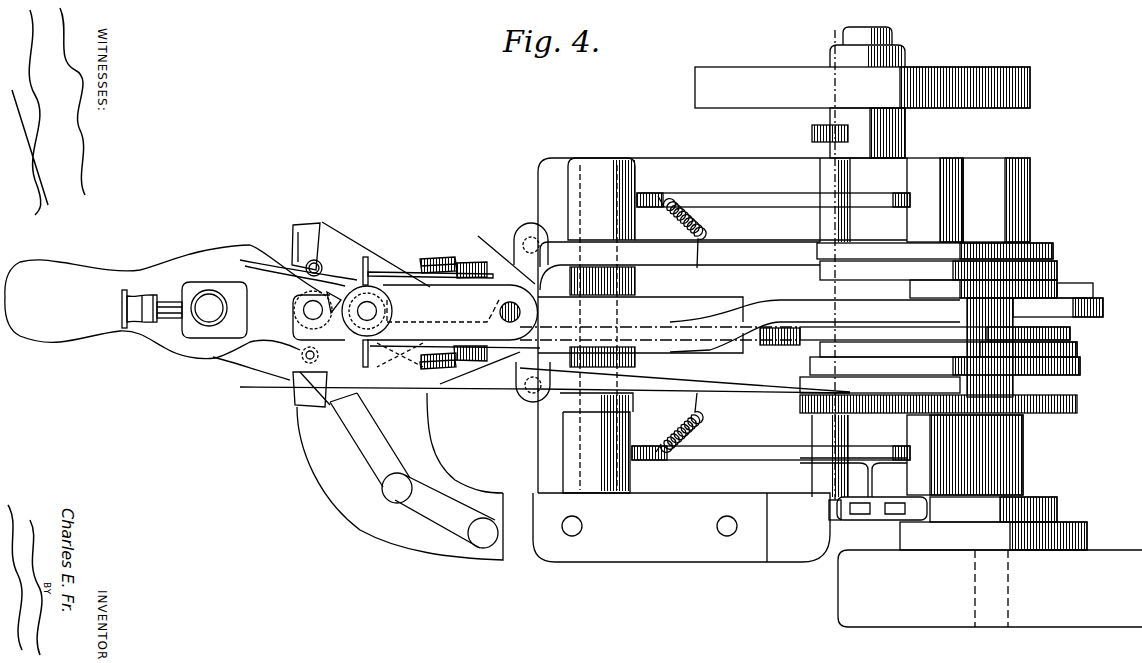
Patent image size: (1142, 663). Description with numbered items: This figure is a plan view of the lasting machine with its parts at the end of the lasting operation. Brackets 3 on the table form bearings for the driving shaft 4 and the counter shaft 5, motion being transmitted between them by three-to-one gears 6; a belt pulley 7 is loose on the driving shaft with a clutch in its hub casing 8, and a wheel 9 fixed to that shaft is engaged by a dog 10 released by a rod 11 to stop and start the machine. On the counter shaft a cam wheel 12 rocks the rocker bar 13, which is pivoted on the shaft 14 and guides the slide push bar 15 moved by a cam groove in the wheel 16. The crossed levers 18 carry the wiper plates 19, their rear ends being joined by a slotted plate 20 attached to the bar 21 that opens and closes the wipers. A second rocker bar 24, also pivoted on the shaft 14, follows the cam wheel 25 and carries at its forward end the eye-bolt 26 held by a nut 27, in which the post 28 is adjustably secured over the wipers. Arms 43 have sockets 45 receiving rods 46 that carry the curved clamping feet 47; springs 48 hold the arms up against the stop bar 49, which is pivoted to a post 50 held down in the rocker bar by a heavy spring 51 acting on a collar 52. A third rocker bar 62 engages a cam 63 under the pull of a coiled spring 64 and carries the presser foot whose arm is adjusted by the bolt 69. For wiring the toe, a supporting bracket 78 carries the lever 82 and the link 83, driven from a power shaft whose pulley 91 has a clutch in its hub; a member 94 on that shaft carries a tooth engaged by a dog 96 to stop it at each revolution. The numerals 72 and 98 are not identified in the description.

The brackets 3 is at (722, 195).
The driving shaft 4 is at (995, 160).
The counter shaft 5 is at (935, 160).
The three-to-one gears 6 is at (1080, 405).
The belt pulley 7 is at (1063, 620).
The hub casing 8 is at (1090, 531).
The wheel 9 is at (1062, 508).
The dog 10 is at (888, 514).
The rod 11 is at (834, 520).
The cam wheel 12 is at (1065, 285).
The rocker bar 13 is at (658, 300).
The shaft 14 is at (598, 157).
The slide push bar 15 is at (790, 324).
The wheel 16 is at (1080, 351).
The crossed levers 18 is at (338, 232).
The wiper plates 19 is at (294, 232).
The plate 20 is at (528, 222).
The bar 21 is at (785, 340).
The rocker bar 24 is at (296, 329).
The cam wheel 25 is at (1080, 263).
The eye-bolt 26 is at (297, 305).
The nut 27 is at (268, 369).
The post 28 is at (306, 296).
The arms 43 is at (470, 262).
The sockets 45 is at (302, 223).
The rods 46 is at (315, 260).
The clamping feet 47 is at (290, 262).
The springs 48 is at (440, 258).
The stop bar 49 is at (366, 257).
The post 50 is at (378, 313).
The heavy spring 51 is at (424, 272).
The collar 52 is at (382, 305).
The rocker bar 62 is at (192, 283).
The cam 63 is at (1082, 370).
The coiled spring 64 is at (690, 430).
The bolt 69 is at (120, 310).
The gear 72 is at (1095, 300).
The supporting bracket 78 is at (325, 478).
The lever 82 is at (390, 452).
The link 83 is at (418, 508).
The pulley 91 is at (748, 70).
The member 94 is at (905, 135).
The dog 96 is at (812, 135).
The gear 98 is at (1040, 246).